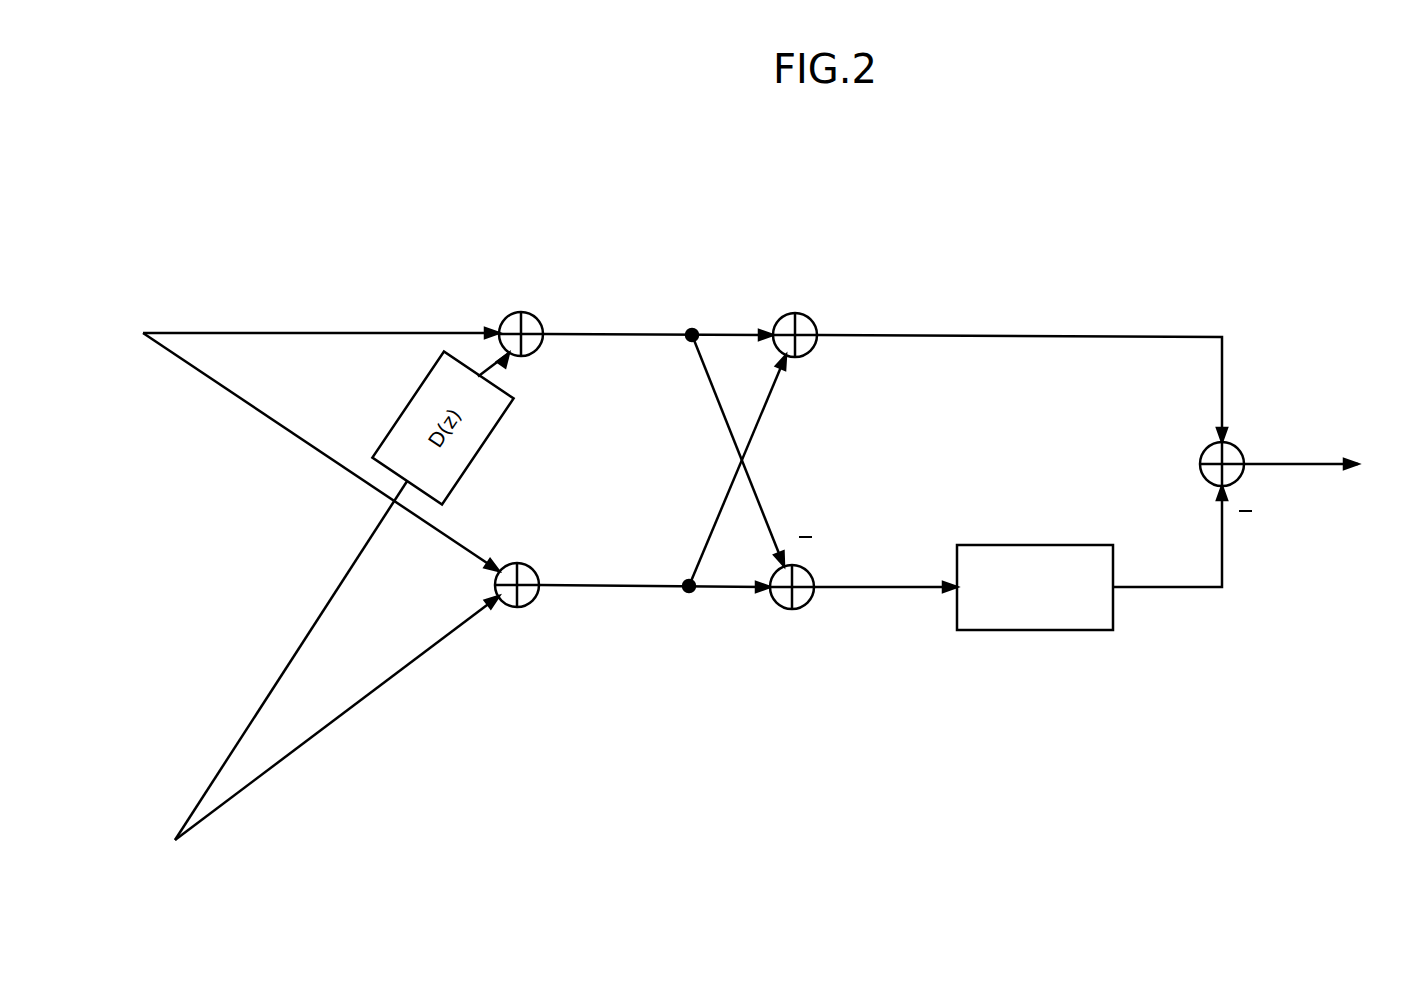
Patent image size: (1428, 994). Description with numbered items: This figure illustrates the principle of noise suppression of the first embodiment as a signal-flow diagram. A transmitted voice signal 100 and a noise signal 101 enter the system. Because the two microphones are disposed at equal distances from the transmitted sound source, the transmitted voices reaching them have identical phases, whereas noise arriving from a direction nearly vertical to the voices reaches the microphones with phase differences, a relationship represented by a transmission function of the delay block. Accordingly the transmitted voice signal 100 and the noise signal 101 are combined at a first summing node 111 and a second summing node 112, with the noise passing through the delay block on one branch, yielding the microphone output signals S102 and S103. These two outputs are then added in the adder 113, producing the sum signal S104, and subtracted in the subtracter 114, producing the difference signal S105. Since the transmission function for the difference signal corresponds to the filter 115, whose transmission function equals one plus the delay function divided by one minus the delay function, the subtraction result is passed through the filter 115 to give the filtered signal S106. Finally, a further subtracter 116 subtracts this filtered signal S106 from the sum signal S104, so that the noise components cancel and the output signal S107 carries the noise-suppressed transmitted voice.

The input signal S(z) 100 is at (297, 428).
The input signal W(z) 101 is at (318, 605).
The adder 111 is at (503, 312).
The adder 112 is at (519, 607).
The adder 113 is at (795, 313).
The subtracter 114 is at (790, 610).
The filter 115 is at (1047, 632).
The subtractor 116 is at (1199, 462).
The signal A(z) S102 is at (663, 433).
The signal B(z) S103 is at (662, 486).
The signal P(z) S104 is at (1022, 371).
The signal Q(z) S105 is at (885, 589).
The filtered signal S106 is at (1170, 554).
The output signal S107 is at (1335, 466).